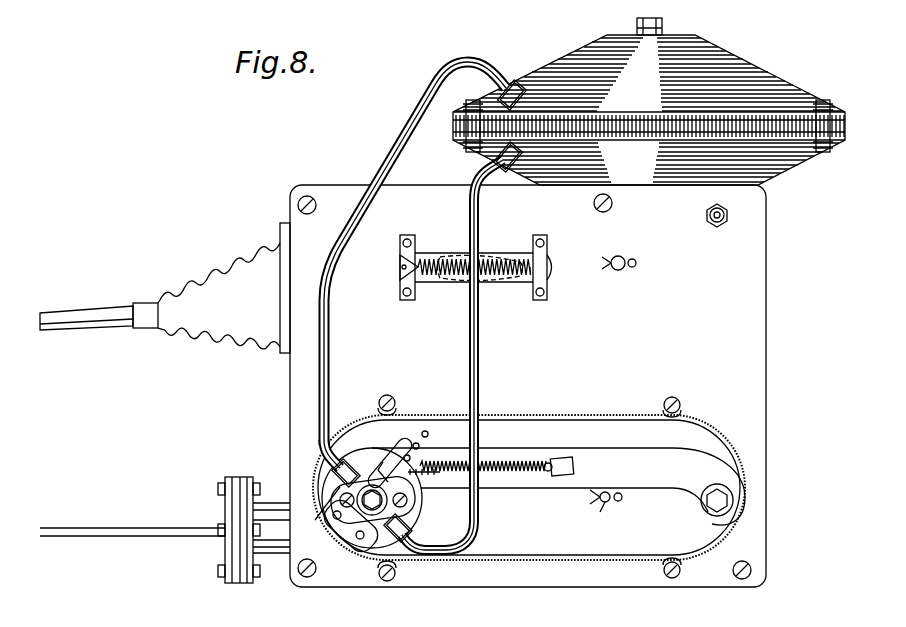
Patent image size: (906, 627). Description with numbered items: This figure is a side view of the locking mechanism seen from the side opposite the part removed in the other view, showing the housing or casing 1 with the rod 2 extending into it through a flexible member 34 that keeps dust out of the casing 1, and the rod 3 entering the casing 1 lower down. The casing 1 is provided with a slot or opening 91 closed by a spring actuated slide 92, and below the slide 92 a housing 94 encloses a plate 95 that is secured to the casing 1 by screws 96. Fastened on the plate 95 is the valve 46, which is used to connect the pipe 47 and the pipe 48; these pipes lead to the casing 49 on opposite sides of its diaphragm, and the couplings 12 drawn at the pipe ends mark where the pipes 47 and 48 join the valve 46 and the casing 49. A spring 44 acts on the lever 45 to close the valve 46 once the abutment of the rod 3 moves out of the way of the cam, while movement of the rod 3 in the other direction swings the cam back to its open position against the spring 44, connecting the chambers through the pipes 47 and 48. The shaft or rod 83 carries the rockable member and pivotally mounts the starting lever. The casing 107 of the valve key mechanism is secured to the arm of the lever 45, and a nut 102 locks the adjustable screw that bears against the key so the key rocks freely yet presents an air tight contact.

The housing or casing 1 is at (752, 357).
The rod 2 is at (70, 312).
The rod 3 is at (120, 527).
The pipe couplings 12 is at (316, 450).
The flexible member 34 is at (198, 274).
The spring 44 is at (503, 458).
The lever 45 is at (410, 452).
The valve 46 is at (352, 478).
The pipe 47 is at (486, 174).
The pipe 48 is at (393, 143).
The casing 49 is at (578, 68).
The shaft or rod 83 is at (605, 508).
The slot or opening 91 is at (460, 260).
The spring actuated slide 92 is at (523, 286).
The housing 94 is at (570, 417).
The plate 95 is at (536, 492).
The screws 96 is at (704, 512).
The nut 102 is at (388, 503).
The casing 107 is at (358, 548).